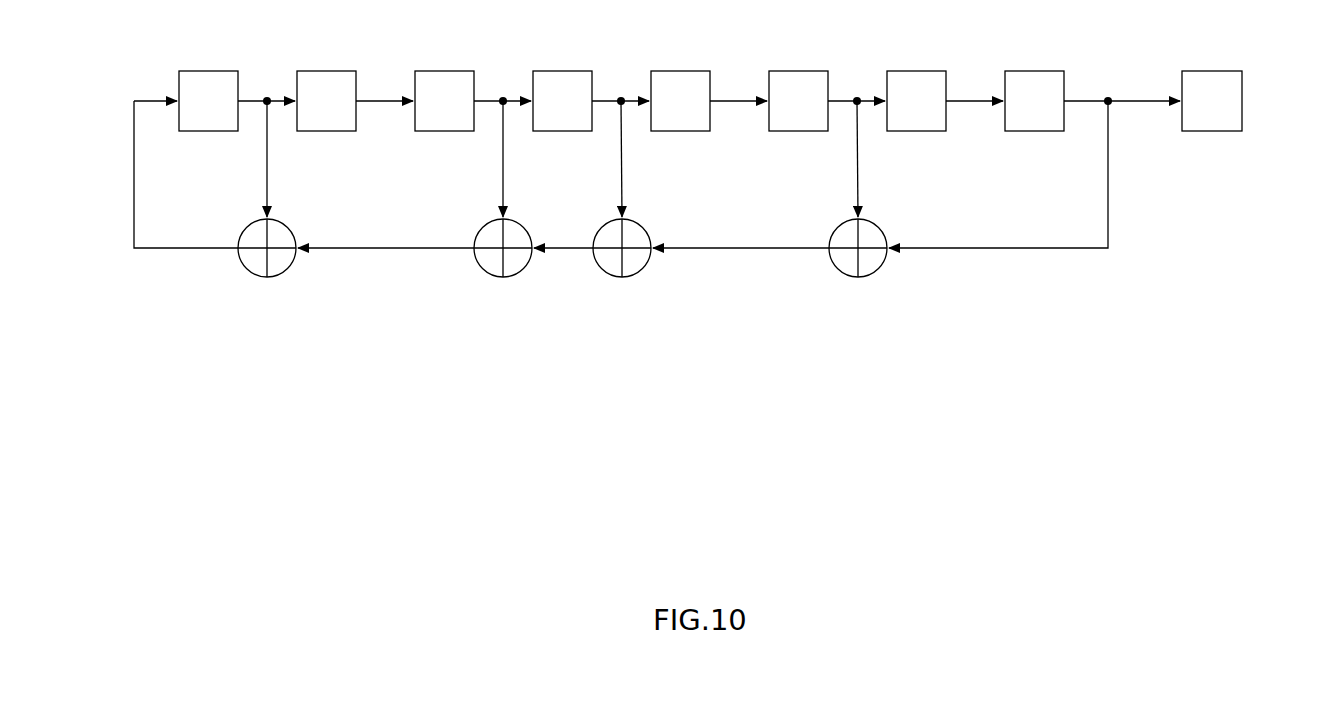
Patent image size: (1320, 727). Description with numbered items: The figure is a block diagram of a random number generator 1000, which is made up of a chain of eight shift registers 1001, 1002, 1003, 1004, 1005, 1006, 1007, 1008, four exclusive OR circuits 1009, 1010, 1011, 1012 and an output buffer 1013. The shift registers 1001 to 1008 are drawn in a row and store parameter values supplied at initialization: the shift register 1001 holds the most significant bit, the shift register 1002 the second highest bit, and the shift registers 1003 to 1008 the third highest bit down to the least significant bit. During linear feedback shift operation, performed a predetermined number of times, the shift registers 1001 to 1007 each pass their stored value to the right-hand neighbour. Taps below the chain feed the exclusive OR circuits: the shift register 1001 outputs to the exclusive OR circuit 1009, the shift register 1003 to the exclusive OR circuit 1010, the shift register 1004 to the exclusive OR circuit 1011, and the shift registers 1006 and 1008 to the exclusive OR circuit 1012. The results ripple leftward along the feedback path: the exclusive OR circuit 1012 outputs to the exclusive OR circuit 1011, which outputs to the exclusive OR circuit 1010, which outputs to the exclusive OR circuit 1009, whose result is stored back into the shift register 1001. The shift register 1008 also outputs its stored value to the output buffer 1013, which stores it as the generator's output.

The random number generator 1000 is at (655, 417).
The shift register 1001 is at (217, 70).
The shift register 1002 is at (335, 70).
The shift register 1003 is at (453, 70).
The shift register 1004 is at (571, 70).
The shift register 1005 is at (689, 70).
The shift register 1006 is at (807, 70).
The shift register 1007 is at (925, 70).
The shift register 1008 is at (1043, 70).
The exclusive OR circuit 1009 is at (267, 278).
The exclusive OR circuit 1010 is at (503, 278).
The exclusive OR circuit 1011 is at (622, 278).
The exclusive OR circuit 1012 is at (858, 278).
The output buffer 1013 is at (1220, 70).